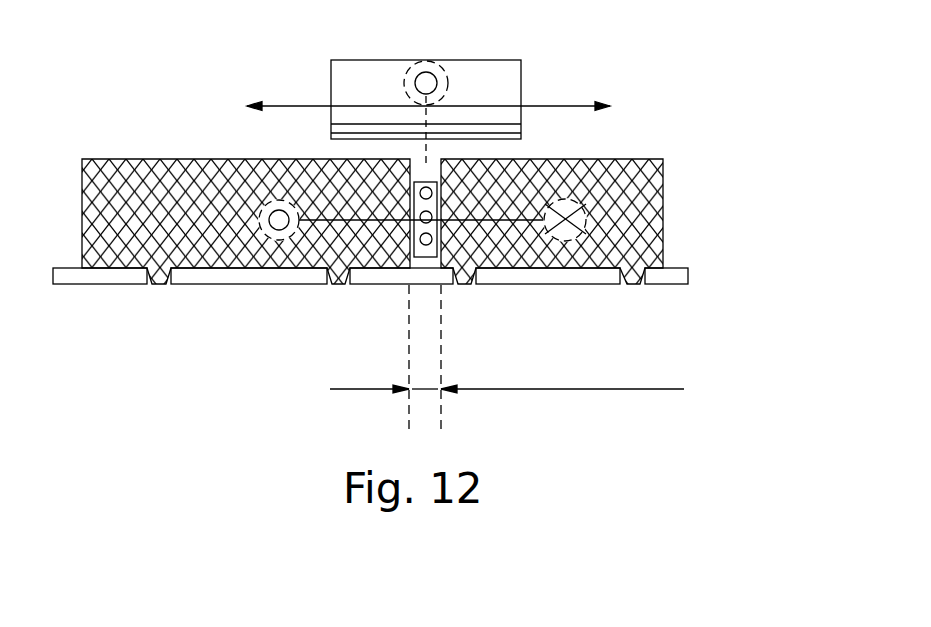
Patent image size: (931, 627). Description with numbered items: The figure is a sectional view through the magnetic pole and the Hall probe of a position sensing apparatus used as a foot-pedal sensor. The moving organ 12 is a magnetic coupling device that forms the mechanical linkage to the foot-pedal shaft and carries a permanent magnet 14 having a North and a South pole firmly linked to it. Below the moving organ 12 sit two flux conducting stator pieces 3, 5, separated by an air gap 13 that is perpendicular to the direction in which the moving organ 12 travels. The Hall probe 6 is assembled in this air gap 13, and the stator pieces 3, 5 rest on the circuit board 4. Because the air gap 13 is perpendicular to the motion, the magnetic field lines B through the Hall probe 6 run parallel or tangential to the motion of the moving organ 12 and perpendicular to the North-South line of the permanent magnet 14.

The moving organ 12 is at (507, 67).
The permanent magnet 14 is at (347, 136).
The flux conducting stator piece 3 is at (118, 160).
The flux conducting stator piece 5 is at (638, 192).
The circuit board 4 is at (663, 285).
The Hall probe 6 is at (435, 285).
The magnetic field lines B is at (347, 285).
The air gap 13 is at (541, 391).